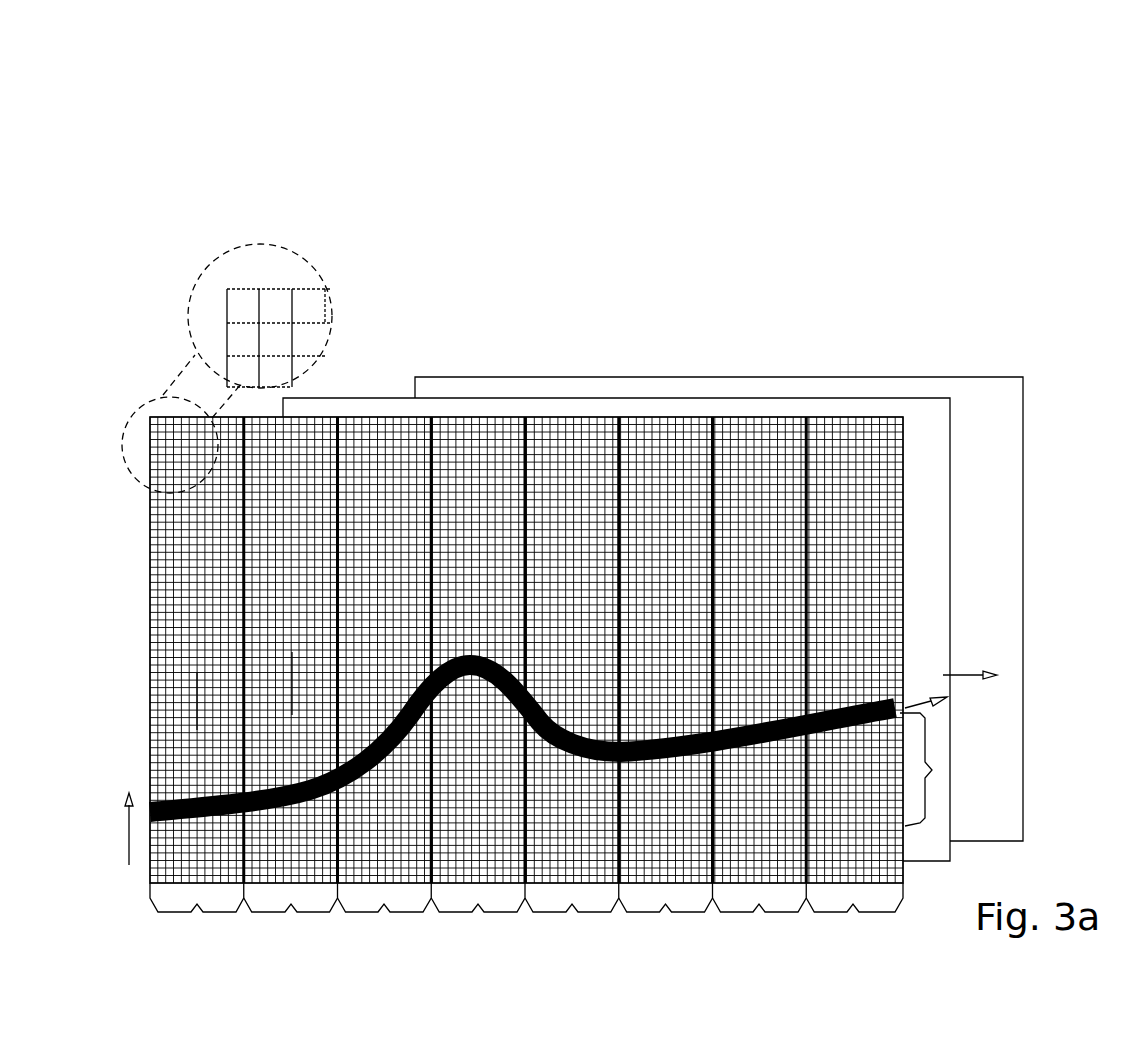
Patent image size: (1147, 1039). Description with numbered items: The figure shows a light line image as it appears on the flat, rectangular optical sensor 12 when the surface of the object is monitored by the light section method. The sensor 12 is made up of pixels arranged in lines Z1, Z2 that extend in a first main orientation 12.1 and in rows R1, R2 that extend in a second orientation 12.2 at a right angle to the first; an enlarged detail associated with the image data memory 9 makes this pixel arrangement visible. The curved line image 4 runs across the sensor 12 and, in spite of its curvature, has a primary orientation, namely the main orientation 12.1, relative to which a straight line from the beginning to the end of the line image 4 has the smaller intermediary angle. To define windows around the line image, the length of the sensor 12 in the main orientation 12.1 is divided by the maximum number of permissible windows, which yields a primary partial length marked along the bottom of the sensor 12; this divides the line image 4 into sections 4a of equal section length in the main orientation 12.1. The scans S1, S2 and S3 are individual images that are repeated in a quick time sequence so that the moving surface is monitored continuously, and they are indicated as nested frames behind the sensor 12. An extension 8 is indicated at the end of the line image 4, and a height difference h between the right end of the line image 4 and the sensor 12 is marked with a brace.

The image data memory 9 is at (257, 259).
The optical sensor 12 is at (865, 435).
The orientation 12.1 is at (733, 892).
The orientation 12.2 is at (110, 829).
The line image 4 is at (745, 748).
The section 4a is at (242, 684).
The extension 8 is at (905, 708).
The scan S1 is at (895, 874).
The scan S2 is at (943, 852).
The scan S3 is at (1008, 818).
The height difference delta h is at (933, 769).
The row R1 is at (240, 275).
The row R2 is at (273, 275).
The line Z1 is at (207, 307).
The line Z2 is at (207, 342).